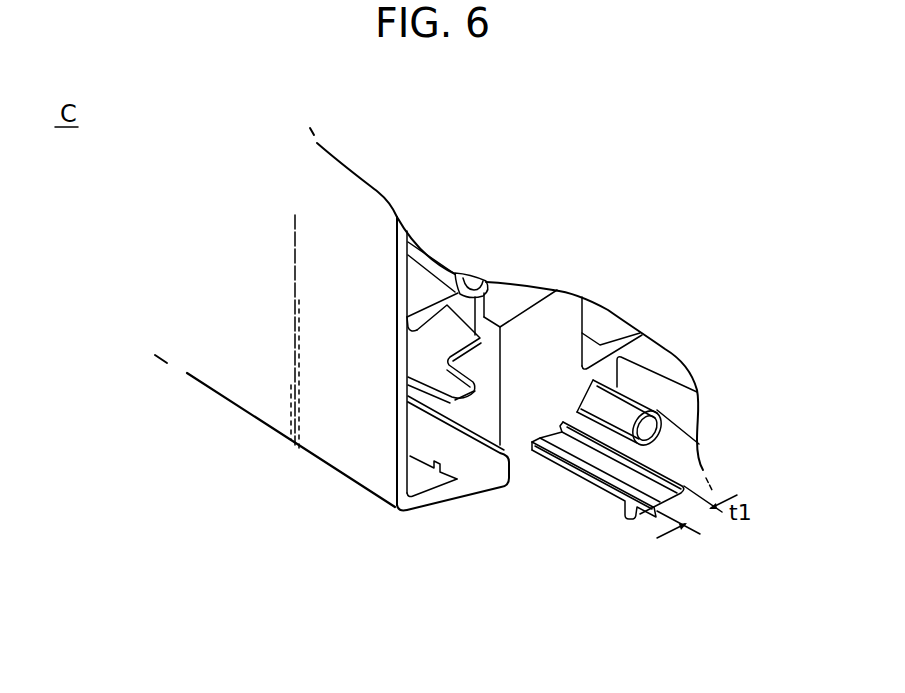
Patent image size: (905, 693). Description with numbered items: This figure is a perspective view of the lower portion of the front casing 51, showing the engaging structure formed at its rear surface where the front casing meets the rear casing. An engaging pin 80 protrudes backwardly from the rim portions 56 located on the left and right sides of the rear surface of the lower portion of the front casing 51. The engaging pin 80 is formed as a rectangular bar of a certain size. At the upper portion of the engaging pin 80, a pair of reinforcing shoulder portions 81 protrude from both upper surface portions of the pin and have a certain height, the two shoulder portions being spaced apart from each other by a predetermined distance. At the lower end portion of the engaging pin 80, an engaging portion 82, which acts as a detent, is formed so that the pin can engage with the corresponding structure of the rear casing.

The front casing 51 is at (233, 381).
The rim portions 56 is at (518, 470).
The engaging pin 80 is at (608, 523).
The reinforcing shoulder portions 81 is at (578, 465).
The engaging portion 82 is at (634, 516).